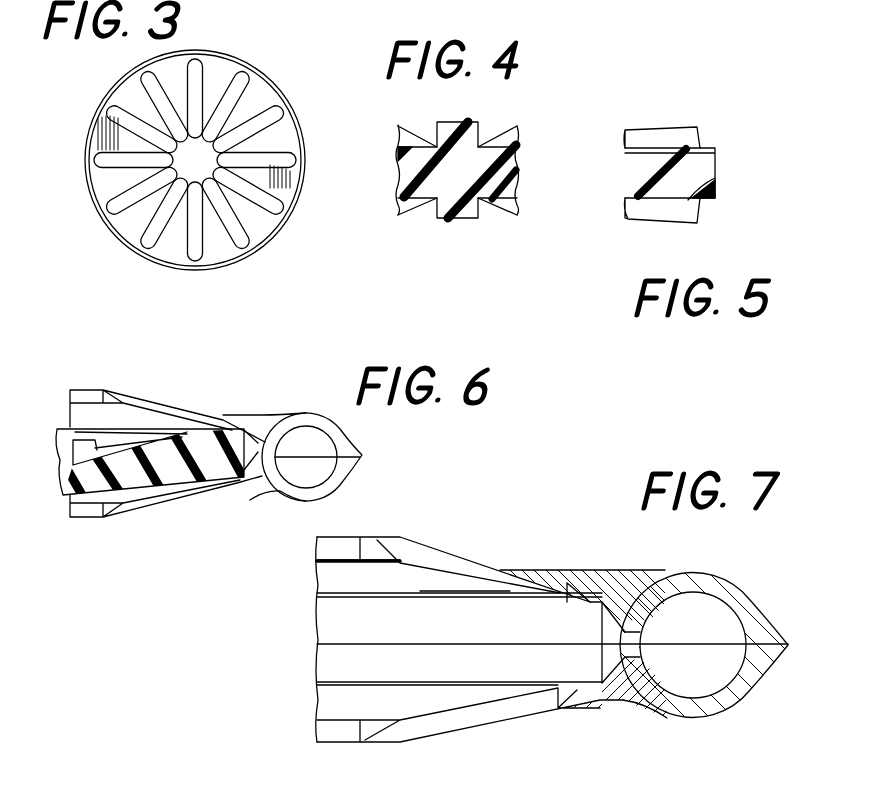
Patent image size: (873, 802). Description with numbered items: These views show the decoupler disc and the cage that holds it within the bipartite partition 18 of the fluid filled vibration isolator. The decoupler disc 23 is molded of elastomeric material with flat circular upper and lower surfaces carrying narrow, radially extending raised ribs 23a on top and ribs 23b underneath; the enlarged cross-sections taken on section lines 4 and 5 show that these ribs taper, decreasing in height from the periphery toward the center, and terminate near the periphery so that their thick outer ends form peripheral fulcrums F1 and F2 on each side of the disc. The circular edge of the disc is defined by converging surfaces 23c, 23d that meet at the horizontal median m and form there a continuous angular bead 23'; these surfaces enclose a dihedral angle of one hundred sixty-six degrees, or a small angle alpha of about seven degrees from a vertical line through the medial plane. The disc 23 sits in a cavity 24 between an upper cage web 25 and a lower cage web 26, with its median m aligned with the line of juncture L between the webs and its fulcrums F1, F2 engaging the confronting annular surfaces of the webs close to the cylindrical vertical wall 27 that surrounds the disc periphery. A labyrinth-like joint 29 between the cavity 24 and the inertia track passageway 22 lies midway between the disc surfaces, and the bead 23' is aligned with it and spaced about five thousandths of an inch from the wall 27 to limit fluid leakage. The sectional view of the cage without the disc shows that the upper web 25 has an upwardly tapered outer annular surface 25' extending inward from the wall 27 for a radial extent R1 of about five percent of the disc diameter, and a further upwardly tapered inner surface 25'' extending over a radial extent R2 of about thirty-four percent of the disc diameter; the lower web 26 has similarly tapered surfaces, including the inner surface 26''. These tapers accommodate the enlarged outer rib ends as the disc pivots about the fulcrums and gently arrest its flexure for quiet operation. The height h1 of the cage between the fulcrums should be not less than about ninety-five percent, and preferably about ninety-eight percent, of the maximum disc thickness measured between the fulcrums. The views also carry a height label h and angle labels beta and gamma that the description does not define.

In FIG. 3, the section line 4 is at (213, 256).
In FIG. 3, the section line 5 is at (270, 110).
In FIG. 6, the bipartite partition 18 is at (358, 461).
In FIG. 7, the bipartite partition 18 is at (787, 630).
In FIG. 6, the inertia track passageway 22 is at (322, 433).
In FIG. 7, the inertia track passageway 22 is at (725, 683).
In FIG. 3, the decoupler disc 23 is at (213, 160).
In FIG. 4, the decoupler disc 23 is at (483, 170).
In FIG. 5, the decoupler disc 23 is at (633, 183).
In FIG. 6, the decoupler disc 23 is at (154, 495).
In FIG. 3, the upper rib 23a is at (273, 110).
In FIG. 4, the upper rib 23a is at (467, 122).
In FIG. 5, the upper rib 23a is at (670, 99).
In FIG. 4, the lower rib 23b is at (461, 214).
In FIG. 5, the lower rib 23b is at (643, 206).
In FIG. 5, the converging surface 23c is at (637, 150).
In FIG. 5, the converging surface 23d is at (668, 200).
In FIG. 5, the angular bead 23' is at (748, 207).
In FIG. 6, the decoupler cavity 24 is at (137, 413).
In FIG. 7, the decoupler cavity 24 is at (330, 701).
In FIG. 6, the upper cage web 25 is at (254, 385).
In FIG. 7, the upper cage web 25 is at (459, 545).
In FIG. 7, the tapered outer annular surface 25' is at (522, 560).
In FIG. 7, the tapered inner surface 25'' is at (422, 606).
In FIG. 6, the lower cage web 26 is at (183, 509).
In FIG. 7, the lower cage web 26 is at (470, 738).
In FIG. 7, the tapered inner surface 26'' is at (449, 748).
In FIG. 7, the cylindrical vertical wall 27 is at (597, 677).
In FIG. 7, the labyrinth-like joint 29 is at (633, 652).
In FIG. 5, the peripheral fulcrum F1 is at (697, 127).
In FIG. 6, the peripheral fulcrum F1 is at (243, 473).
In FIG. 5, the peripheral fulcrum F2 is at (692, 199).
In FIG. 5, the horizontal median m is at (788, 173).
In FIG. 6, the horizontal median m is at (213, 463).
In FIG. 6, the line of juncture L is at (297, 455).
In FIG. 7, the line of juncture L is at (692, 593).
In FIG. 7, the radial extent R1 is at (603, 498).
In FIG. 7, the radial extent R2 is at (560, 498).
In FIG. 7, the cage height h1 is at (585, 602).
In FIG. 5, the web height h is at (738, 190).
In FIG. 5, the angle alpha is at (715, 212).
In FIG. 7, the angle beta is at (630, 620).
In FIG. 7, the angle gamma is at (425, 581).